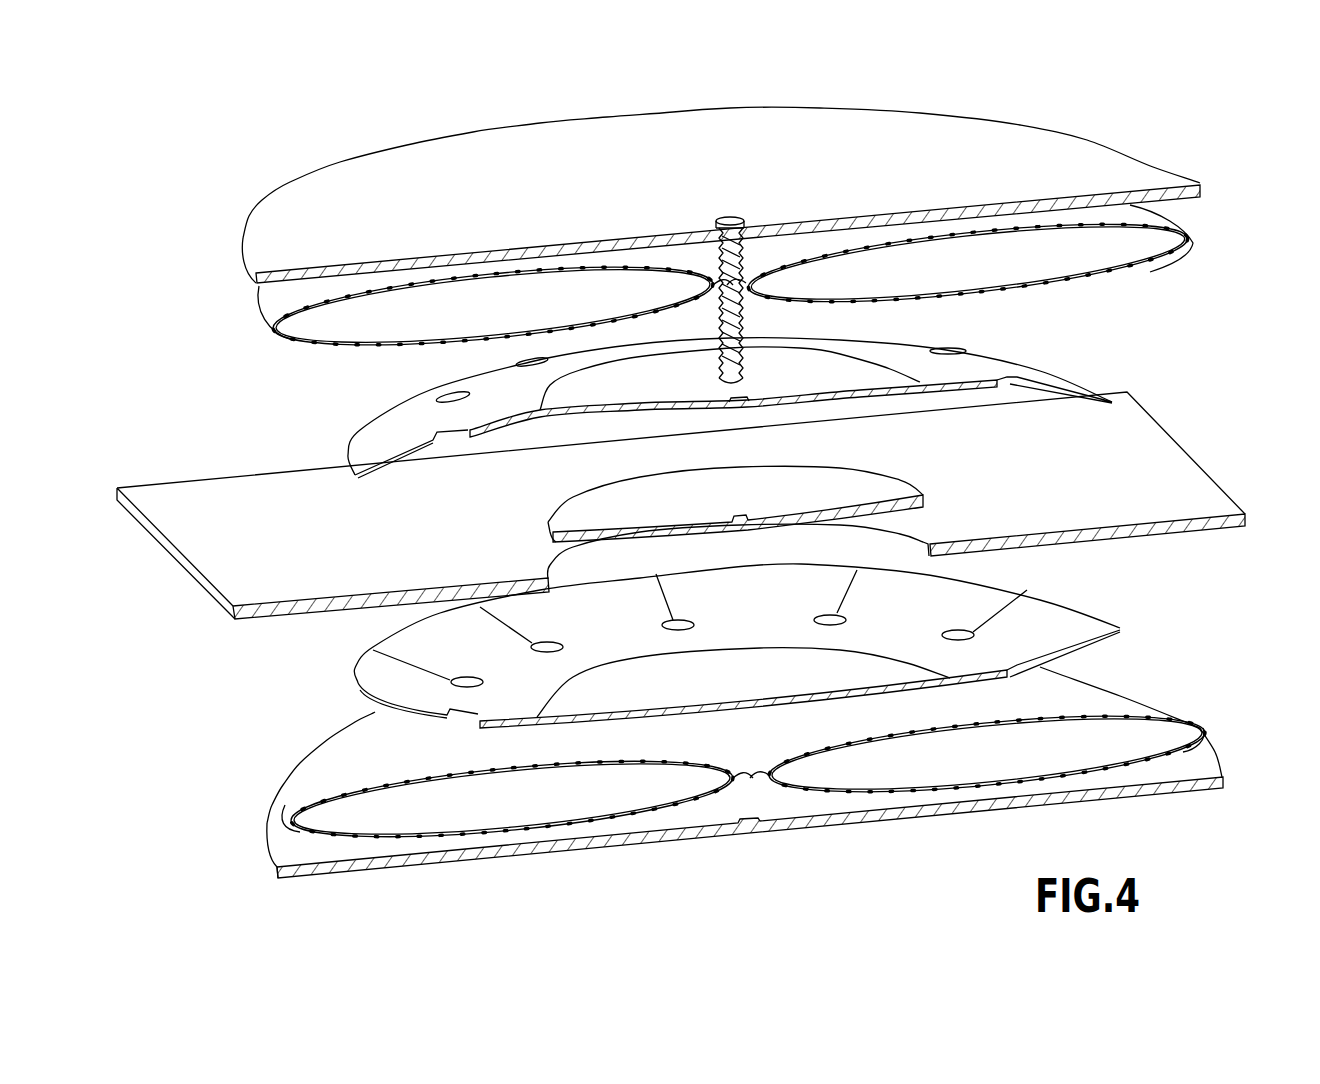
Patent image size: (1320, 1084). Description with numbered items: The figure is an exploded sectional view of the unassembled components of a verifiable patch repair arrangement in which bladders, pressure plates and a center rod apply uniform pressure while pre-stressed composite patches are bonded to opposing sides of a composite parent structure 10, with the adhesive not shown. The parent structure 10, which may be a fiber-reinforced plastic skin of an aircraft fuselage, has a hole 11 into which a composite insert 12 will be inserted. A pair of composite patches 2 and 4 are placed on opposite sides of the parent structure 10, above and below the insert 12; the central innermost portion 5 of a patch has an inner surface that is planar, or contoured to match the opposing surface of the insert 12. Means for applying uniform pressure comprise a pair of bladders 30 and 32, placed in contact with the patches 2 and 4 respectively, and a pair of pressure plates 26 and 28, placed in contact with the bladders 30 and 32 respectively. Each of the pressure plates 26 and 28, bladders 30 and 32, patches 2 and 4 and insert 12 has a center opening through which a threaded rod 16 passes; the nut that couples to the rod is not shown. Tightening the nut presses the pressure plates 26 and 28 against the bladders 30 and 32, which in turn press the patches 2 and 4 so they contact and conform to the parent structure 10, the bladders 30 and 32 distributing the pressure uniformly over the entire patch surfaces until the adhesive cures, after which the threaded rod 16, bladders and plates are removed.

The composite patch 2 is at (363, 447).
The composite patch 4 is at (377, 685).
The innermost portion 5 is at (837, 353).
The composite parent structure 10 is at (681, 503).
The hole 11 is at (550, 580).
The composite insert 12 is at (897, 482).
The threaded rod 16 is at (743, 310).
The pressure plate 26 is at (1077, 158).
The pressure plate 28 is at (1185, 770).
The bladder 30 is at (1108, 272).
The bladder 32 is at (1117, 695).